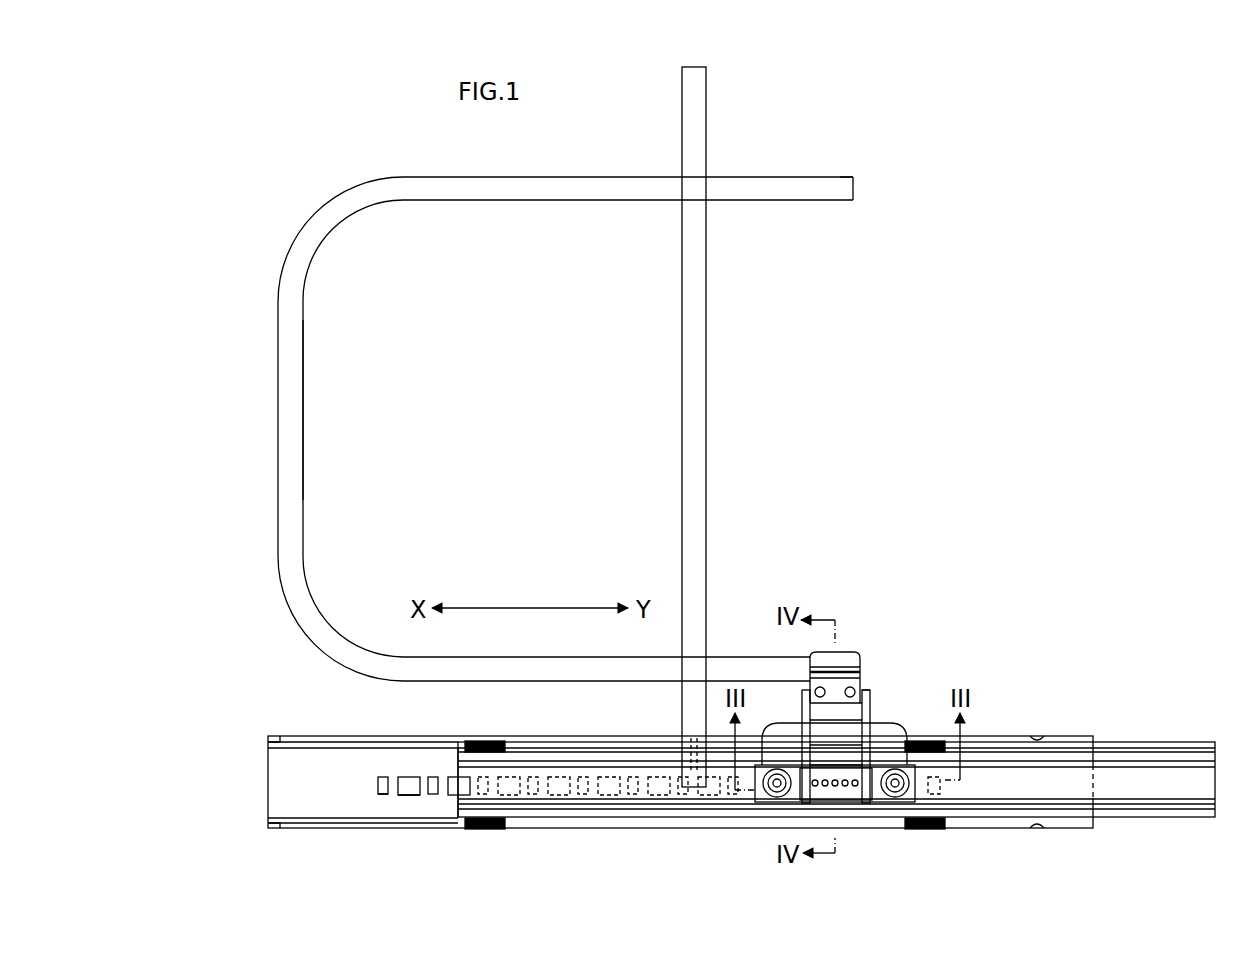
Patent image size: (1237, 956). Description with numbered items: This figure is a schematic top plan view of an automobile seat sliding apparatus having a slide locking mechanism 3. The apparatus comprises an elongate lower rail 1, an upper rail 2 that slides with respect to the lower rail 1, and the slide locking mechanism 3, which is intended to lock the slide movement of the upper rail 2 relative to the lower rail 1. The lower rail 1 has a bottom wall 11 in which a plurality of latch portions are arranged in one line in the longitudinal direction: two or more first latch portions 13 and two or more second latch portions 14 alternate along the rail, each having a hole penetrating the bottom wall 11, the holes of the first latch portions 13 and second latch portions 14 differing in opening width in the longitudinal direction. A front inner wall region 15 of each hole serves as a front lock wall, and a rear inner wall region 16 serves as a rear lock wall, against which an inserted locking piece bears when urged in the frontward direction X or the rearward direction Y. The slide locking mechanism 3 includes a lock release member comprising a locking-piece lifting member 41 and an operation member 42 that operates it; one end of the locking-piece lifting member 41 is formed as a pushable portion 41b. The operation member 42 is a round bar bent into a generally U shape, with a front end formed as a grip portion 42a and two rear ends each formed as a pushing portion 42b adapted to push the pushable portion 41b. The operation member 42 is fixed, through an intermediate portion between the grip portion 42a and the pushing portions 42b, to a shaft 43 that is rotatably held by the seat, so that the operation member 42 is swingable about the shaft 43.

The lower rail 1 is at (297, 737).
The upper rail 2 is at (1148, 742).
The slide locking mechanism 3 is at (881, 711).
The bottom wall 11 is at (338, 770).
The first latch portions 13 is at (383, 776).
The second latch portions 14 is at (408, 776).
The front inner wall region 15 is at (379, 796).
The rear inner wall region 16 is at (384, 796).
The locking-piece lifting member 41 is at (802, 706).
The pushable portion 41b is at (861, 662).
The operation member 42 is at (300, 351).
The grip portion 42a is at (300, 406).
The pushing portion 42b is at (833, 188).
The shaft 43 is at (698, 320).